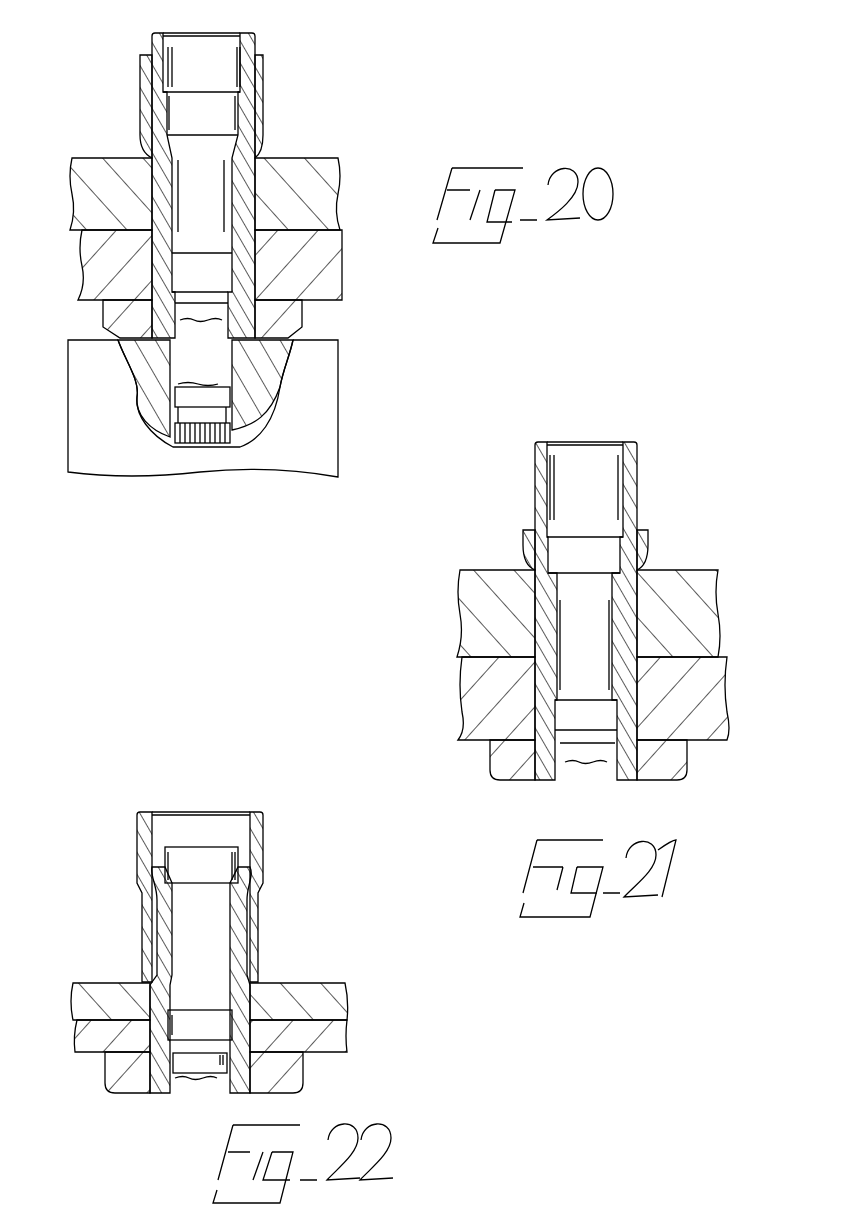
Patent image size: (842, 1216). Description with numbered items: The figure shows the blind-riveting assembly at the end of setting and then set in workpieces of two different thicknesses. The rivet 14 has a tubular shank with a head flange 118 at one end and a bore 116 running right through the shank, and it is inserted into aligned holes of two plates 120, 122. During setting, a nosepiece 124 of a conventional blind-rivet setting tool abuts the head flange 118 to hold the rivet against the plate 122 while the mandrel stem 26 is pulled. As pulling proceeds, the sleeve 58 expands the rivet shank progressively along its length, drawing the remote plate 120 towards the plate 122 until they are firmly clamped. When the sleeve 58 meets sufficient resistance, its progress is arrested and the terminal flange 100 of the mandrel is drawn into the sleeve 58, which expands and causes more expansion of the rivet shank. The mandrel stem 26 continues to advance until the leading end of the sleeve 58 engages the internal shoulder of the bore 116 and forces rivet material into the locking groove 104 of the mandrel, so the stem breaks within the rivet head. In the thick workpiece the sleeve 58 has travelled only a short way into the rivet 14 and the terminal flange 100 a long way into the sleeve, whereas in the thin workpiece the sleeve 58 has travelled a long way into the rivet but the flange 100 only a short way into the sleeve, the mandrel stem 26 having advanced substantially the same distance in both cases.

In FIG. 21, the rivet 14 is at (543, 607).
In FIG. 22, the rivet 14 is at (150, 918).
In FIG. 20, the mandrel stem 26 is at (220, 443).
In FIG. 20, the sleeve 58 is at (247, 67).
In FIG. 21, the sleeve 58 is at (637, 472).
In FIG. 22, the sleeve 58 is at (237, 917).
In FIG. 20, the terminal flange 100 is at (220, 117).
In FIG. 21, the terminal flange 100 is at (597, 553).
In FIG. 22, the terminal flange 100 is at (223, 862).
In FIG. 20, the locking groove 104 is at (232, 297).
In FIG. 21, the locking groove 104 is at (612, 738).
In FIG. 22, the locking groove 104 is at (172, 1055).
In FIG. 20, the bore 116 is at (148, 127).
In FIG. 20, the head flange 118 is at (120, 318).
In FIG. 21, the head flange 118 is at (508, 758).
In FIG. 22, the head flange 118 is at (293, 1073).
In FIG. 20, the plate 120 is at (317, 202).
In FIG. 21, the plate 120 is at (475, 578).
In FIG. 22, the plate 120 is at (325, 993).
In FIG. 20, the plate 122 is at (333, 277).
In FIG. 21, the plate 122 is at (480, 687).
In FIG. 22, the plate 122 is at (330, 1045).
In FIG. 20, the nosepiece 124 is at (128, 438).